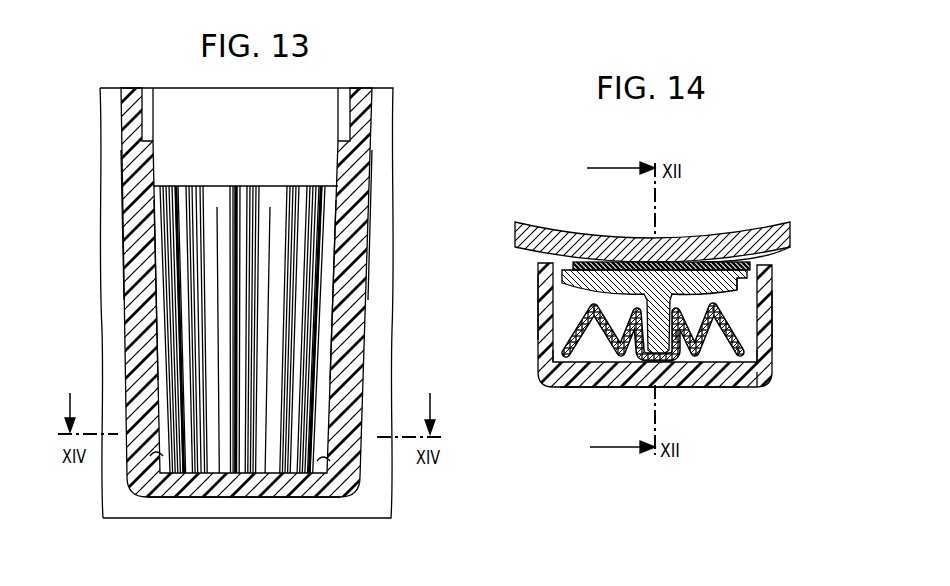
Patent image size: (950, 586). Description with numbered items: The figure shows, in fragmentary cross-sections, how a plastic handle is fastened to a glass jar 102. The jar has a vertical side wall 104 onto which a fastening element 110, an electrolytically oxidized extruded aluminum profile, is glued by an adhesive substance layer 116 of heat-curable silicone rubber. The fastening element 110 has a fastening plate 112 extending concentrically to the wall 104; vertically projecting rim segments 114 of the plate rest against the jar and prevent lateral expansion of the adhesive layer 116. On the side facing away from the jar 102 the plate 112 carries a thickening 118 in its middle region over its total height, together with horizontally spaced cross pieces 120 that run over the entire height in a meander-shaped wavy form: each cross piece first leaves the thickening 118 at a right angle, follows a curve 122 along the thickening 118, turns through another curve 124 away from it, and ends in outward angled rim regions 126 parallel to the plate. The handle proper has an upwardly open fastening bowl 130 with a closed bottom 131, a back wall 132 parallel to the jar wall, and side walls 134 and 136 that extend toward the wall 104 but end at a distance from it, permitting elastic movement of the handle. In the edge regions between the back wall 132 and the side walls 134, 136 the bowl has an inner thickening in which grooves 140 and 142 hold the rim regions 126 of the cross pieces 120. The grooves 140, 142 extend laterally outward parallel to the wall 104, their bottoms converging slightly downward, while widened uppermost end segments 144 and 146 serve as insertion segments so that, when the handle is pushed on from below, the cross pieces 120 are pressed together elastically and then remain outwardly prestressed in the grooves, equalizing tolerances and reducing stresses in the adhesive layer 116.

In FIG. 13, the glass jar 102 is at (111, 80).
In FIG. 13, the vertical side wall 104 is at (385, 118).
In FIG. 14, the vertical side wall 104 is at (772, 223).
In FIG. 13, the fastening element 110 is at (217, 160).
In FIG. 14, the fastening element 110 is at (745, 313).
In FIG. 14, the fastening plate 112 is at (737, 285).
In FIG. 14, the rim segments 114 is at (742, 265).
In FIG. 14, the adhesive substance layer 116 is at (590, 260).
In FIG. 13, the thickening 118 is at (249, 186).
In FIG. 14, the thickening 118 is at (668, 285).
In FIG. 13, the cross pieces 120 is at (178, 170).
In FIG. 14, the cross pieces 120 is at (630, 340).
In FIG. 13, the curve 122 is at (278, 185).
In FIG. 14, the curve 122 is at (677, 348).
In FIG. 13, the curve 124 is at (187, 465).
In FIG. 14, the curve 124 is at (740, 350).
In FIG. 13, the rim regions 126 is at (160, 280).
In FIG. 14, the rim regions 126 is at (748, 387).
In FIG. 13, the fastening bowl 130 is at (381, 338).
In FIG. 14, the fastening bowl 130 is at (530, 325).
In FIG. 13, the bottom 131 is at (250, 483).
In FIG. 14, the back wall 132 is at (572, 377).
In FIG. 13, the side wall 134 is at (133, 203).
In FIG. 14, the side wall 134 is at (545, 287).
In FIG. 13, the side wall 136 is at (368, 200).
In FIG. 14, the side wall 136 is at (767, 335).
In FIG. 13, the groove 140 is at (150, 453).
In FIG. 14, the groove 140 is at (565, 355).
In FIG. 13, the groove 142 is at (323, 458).
In FIG. 14, the groove 142 is at (743, 358).
In FIG. 13, the uppermost end segment 144 is at (148, 140).
In FIG. 13, the uppermost end segment 146 is at (343, 140).